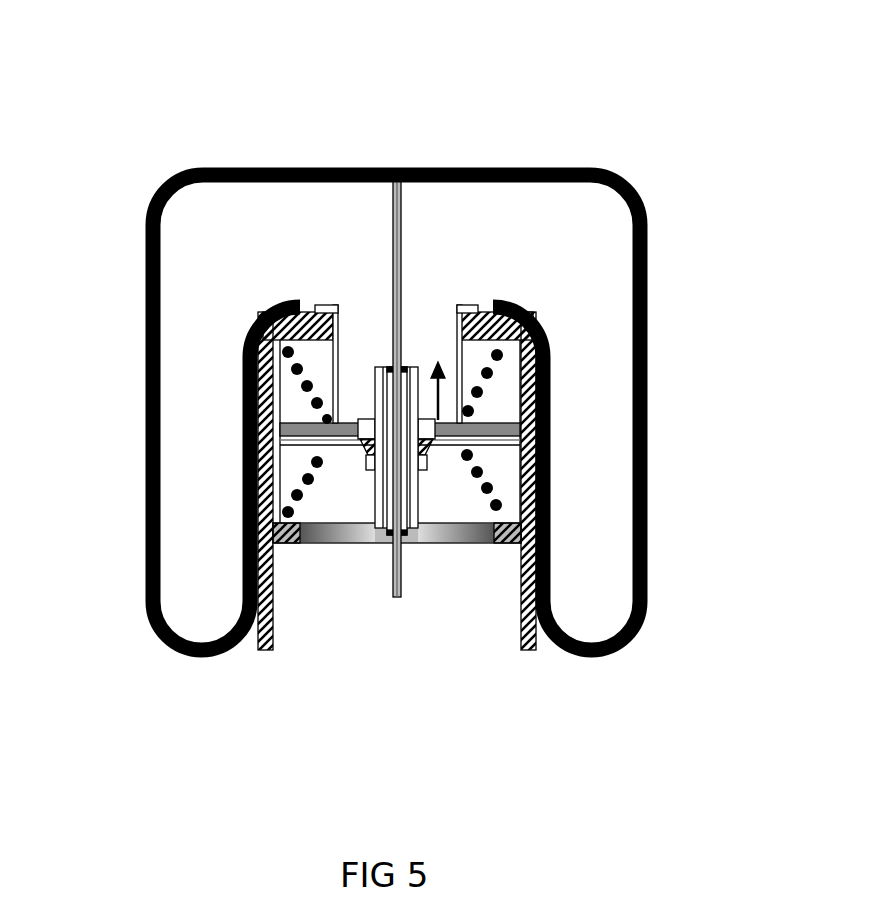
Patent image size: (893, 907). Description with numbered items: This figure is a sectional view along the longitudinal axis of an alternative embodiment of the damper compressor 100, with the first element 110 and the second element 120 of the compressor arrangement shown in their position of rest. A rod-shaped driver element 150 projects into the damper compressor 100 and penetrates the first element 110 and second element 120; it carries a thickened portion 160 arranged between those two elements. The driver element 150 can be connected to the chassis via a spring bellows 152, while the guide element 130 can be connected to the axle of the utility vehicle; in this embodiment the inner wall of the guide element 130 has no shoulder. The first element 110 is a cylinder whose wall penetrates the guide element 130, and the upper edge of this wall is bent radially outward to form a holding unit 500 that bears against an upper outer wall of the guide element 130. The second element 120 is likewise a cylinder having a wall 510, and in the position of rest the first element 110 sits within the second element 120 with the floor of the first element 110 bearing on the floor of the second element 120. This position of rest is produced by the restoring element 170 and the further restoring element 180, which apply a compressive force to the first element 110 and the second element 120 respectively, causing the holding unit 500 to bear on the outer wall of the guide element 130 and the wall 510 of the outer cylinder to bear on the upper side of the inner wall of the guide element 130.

The damper compressor 100 is at (130, 106).
The first element 110 is at (548, 398).
The second element 120 is at (483, 443).
The guide element 130 is at (483, 320).
The driver element 150 is at (375, 490).
The spring bellows 152 is at (227, 222).
The thickened portion 160 is at (363, 422).
The restoring element 170 is at (297, 365).
The further restoring element 180 is at (297, 495).
The holding unit 500 is at (465, 303).
The wall 510 is at (548, 345).